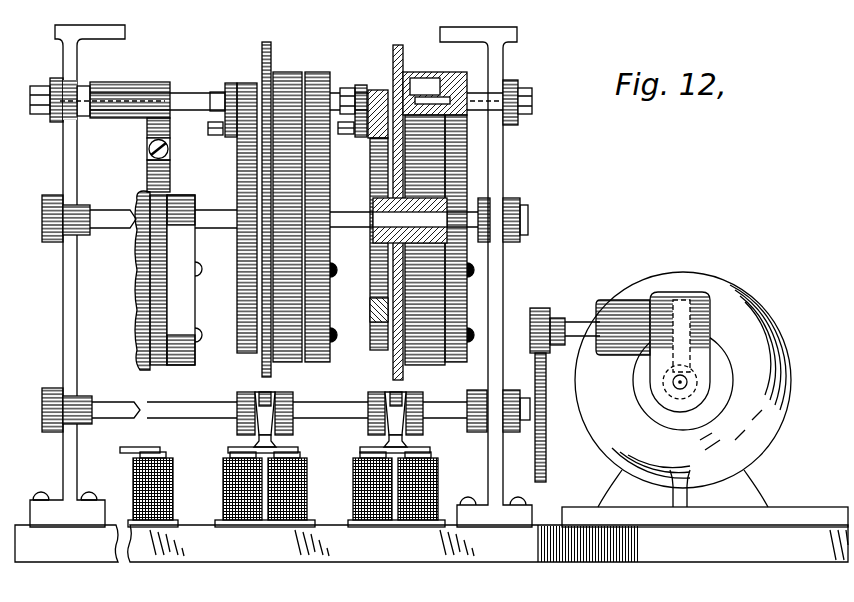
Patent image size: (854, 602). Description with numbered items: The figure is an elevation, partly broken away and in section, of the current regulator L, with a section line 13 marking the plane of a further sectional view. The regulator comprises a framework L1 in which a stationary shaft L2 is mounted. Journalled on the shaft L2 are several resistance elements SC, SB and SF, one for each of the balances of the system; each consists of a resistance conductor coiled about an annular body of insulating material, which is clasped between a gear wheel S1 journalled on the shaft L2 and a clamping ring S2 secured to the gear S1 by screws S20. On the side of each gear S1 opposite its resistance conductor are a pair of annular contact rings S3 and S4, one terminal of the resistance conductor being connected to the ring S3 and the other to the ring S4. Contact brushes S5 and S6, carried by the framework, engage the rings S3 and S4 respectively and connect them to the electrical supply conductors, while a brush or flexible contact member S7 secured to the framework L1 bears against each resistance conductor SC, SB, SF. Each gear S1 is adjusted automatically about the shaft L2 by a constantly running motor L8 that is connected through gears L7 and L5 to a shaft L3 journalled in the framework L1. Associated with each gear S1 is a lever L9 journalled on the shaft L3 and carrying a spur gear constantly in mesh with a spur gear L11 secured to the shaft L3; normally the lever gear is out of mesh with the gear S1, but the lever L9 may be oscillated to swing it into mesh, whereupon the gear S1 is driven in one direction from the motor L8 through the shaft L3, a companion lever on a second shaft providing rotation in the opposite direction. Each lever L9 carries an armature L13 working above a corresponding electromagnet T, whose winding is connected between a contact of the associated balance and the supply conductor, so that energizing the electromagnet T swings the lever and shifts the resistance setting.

The section line of Fig. 13 is at (292, 17).
The regulator L is at (424, 550).
The framework L1 is at (70, 290).
The stationary shaft L2 is at (488, 198).
The shaft L3 is at (330, 418).
The gear L5 is at (546, 468).
The gear L7 is at (546, 322).
The motor L8 is at (705, 399).
The lever L9 is at (237, 425).
The spur gear L11 is at (268, 402).
The armature L13 is at (430, 450).
The electromagnet T is at (155, 505).
The gear wheel S1 is at (392, 178).
The clamping ring S2 is at (455, 160).
The annular contact ring S3 is at (378, 140).
The annular contact ring S4 is at (396, 95).
The contact brush S5 is at (222, 134).
The contact brush S6 is at (228, 83).
The flexible contact member S7 is at (170, 180).
The screws S20 is at (467, 122).
The resistance element SB is at (292, 72).
The resistance element SC is at (430, 76).
The resistance element SF is at (168, 368).